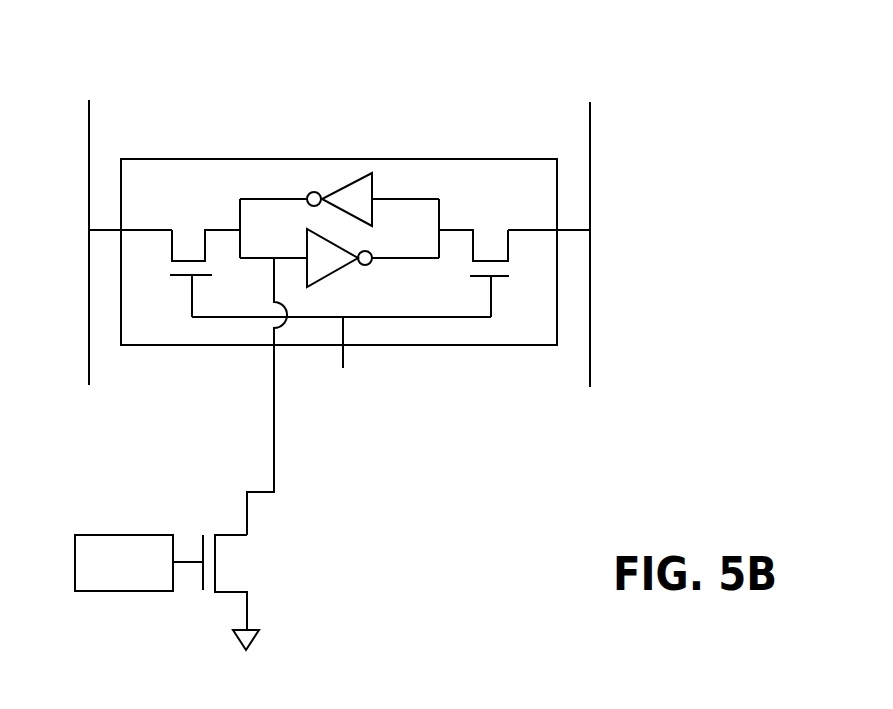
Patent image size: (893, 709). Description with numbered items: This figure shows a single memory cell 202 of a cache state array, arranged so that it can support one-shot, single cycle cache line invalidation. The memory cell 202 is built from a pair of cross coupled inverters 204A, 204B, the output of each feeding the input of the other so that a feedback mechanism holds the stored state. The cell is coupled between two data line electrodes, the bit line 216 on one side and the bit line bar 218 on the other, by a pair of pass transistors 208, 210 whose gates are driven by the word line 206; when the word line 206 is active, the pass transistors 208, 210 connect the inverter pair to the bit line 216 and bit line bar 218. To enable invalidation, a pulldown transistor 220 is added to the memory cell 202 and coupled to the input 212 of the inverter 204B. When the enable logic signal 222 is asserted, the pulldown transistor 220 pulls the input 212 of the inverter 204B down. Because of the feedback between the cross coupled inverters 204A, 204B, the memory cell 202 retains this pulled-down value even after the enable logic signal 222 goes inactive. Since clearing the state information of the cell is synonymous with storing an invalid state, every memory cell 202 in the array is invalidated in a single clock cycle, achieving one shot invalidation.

The memory cell 202 is at (357, 158).
The inverter 204A is at (373, 182).
The inverter 204B is at (342, 267).
The word line 206 is at (345, 322).
The pass transistor 208 is at (185, 242).
The pass transistor 210 is at (490, 237).
The input of inverter 212 is at (270, 260).
The bit line 216 is at (92, 359).
The bit line bar 218 is at (588, 355).
The pulldown transistor 220 is at (223, 520).
The enable logic signal 222 is at (112, 593).